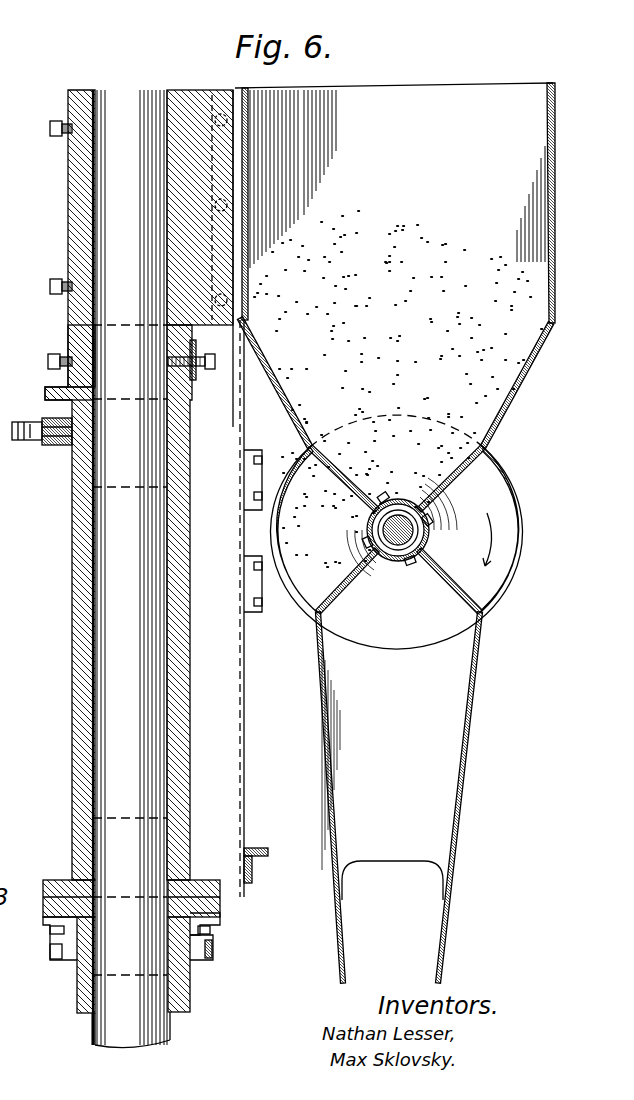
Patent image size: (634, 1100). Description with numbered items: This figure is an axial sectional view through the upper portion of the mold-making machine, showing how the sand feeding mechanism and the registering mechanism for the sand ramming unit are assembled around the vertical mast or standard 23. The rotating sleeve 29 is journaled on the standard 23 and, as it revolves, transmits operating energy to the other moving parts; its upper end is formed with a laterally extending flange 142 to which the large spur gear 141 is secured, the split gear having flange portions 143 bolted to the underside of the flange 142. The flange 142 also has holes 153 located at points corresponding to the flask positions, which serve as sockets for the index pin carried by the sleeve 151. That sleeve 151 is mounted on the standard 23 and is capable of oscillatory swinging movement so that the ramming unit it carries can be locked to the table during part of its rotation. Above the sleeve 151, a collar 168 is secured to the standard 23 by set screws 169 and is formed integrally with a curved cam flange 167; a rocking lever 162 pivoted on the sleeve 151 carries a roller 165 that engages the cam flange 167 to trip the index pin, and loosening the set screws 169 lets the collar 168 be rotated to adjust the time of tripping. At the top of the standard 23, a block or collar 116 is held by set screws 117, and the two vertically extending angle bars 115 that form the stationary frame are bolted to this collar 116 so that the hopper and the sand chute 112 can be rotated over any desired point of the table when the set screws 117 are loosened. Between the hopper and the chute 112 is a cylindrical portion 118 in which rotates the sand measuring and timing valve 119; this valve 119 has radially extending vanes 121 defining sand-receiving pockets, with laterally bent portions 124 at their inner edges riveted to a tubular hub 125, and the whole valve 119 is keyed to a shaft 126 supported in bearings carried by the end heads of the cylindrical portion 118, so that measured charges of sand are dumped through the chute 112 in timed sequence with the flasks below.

The block or collar 116 is at (202, 104).
The set screws 117 is at (386, 86).
The collar 168 is at (70, 340).
The set screws 169 is at (47, 362).
The cam flange 167 is at (45, 395).
The rocking lever 162 is at (27, 443).
The roller 165 is at (56, 448).
The sleeve 151 is at (75, 590).
The holes 153 is at (52, 870).
The flange 142 is at (45, 921).
The flange portions 143 is at (217, 926).
The spur gear 141 is at (208, 962).
The rotating sleeve 29 is at (80, 1020).
The mast or standard 23 is at (105, 1046).
The angle bars 115 is at (243, 691).
The sand chute 112 is at (460, 805).
The cylindrical portion 118 is at (503, 590).
The sand measuring and timing valve 119 is at (470, 594).
The vanes 121 is at (332, 476).
The laterally bent portions 124 is at (426, 512).
The tubular hub 125 is at (390, 562).
The shaft 126 is at (387, 523).